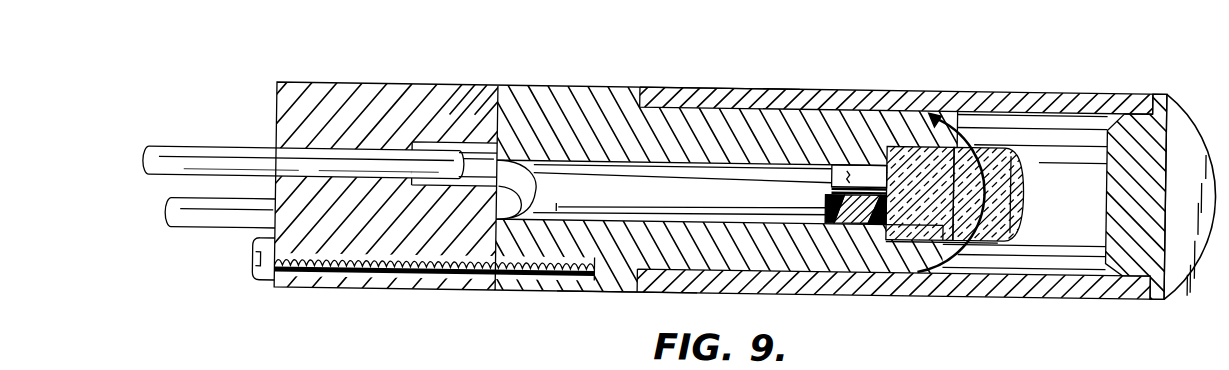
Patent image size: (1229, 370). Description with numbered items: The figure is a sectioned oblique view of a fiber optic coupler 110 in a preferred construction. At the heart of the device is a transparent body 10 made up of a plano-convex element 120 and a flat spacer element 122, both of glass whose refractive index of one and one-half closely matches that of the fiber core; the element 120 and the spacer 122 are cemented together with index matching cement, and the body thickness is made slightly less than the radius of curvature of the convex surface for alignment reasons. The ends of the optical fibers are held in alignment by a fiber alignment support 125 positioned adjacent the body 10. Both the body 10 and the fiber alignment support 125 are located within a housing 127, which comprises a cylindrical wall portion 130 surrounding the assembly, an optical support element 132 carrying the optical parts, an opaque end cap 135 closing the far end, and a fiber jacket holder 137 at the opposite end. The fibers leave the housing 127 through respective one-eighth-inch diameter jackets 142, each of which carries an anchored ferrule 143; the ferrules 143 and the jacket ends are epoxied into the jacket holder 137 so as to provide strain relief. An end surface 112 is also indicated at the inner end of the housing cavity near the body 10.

The transparent body 10 is at (1007, 50).
The coupler 110 is at (553, 326).
The cavity end surface 112 is at (996, 231).
The plano-convex element 120 is at (958, 138).
The flat spacer element 122 is at (902, 138).
The fiber alignment support 125 is at (855, 216).
The housing 127 is at (719, 74).
The cylindrical wall portion 130 is at (772, 95).
The optical support element 132 is at (622, 270).
The opaque end cap 135 is at (1162, 254).
The fiber jacket holder 137 is at (403, 272).
The jackets 142 is at (219, 200).
The ferrule 143 is at (448, 146).